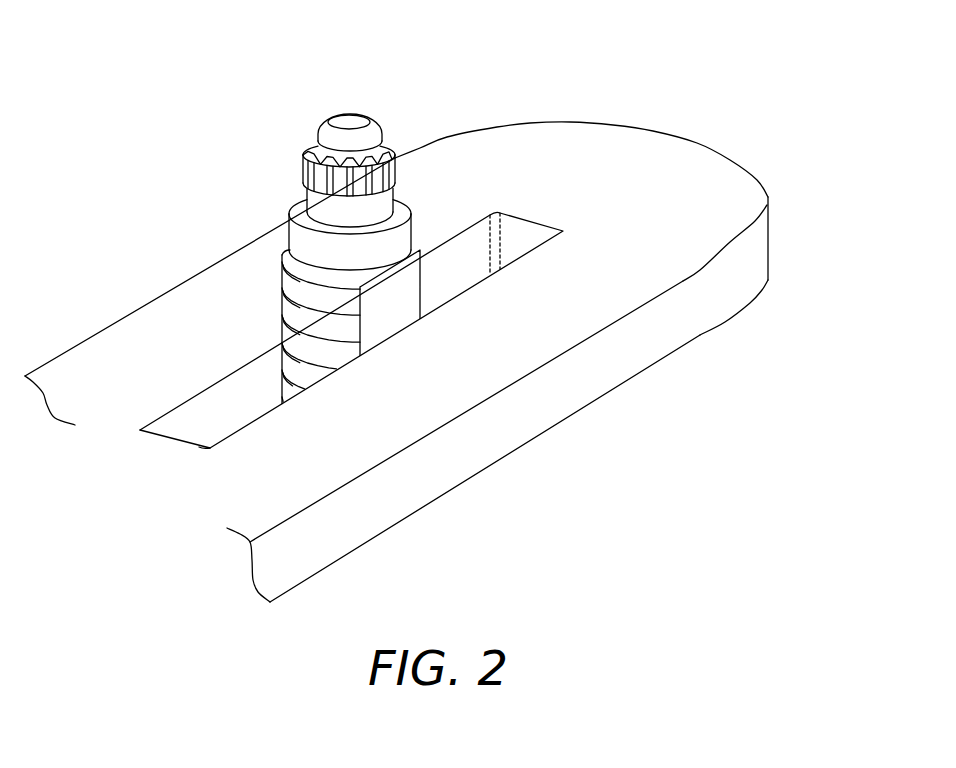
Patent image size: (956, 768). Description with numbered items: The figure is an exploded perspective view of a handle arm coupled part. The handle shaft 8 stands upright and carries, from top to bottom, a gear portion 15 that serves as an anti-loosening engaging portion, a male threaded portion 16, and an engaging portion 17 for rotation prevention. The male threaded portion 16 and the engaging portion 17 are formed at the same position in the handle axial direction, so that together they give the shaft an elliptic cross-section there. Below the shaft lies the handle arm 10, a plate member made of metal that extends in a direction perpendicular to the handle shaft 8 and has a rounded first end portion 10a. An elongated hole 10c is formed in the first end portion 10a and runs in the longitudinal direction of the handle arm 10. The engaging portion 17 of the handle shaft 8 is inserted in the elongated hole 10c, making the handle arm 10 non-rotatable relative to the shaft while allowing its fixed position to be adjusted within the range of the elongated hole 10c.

The handle shaft 8 is at (265, 267).
The handle arm 10 is at (653, 127).
The first end portion 10a is at (703, 157).
The elongated hole 10c is at (530, 253).
The gear portion 15 is at (392, 140).
The male threaded portion 16 is at (282, 308).
The engaging portion 17 is at (393, 297).